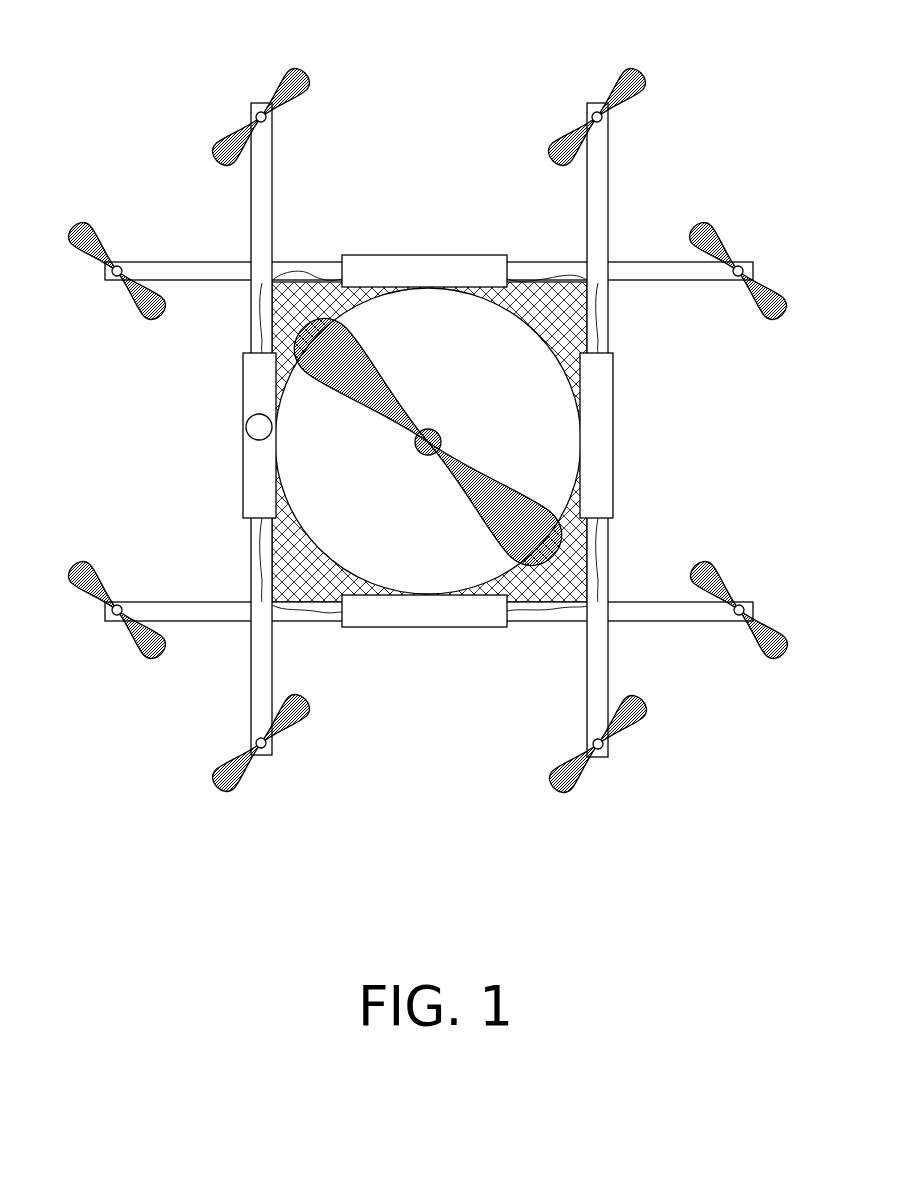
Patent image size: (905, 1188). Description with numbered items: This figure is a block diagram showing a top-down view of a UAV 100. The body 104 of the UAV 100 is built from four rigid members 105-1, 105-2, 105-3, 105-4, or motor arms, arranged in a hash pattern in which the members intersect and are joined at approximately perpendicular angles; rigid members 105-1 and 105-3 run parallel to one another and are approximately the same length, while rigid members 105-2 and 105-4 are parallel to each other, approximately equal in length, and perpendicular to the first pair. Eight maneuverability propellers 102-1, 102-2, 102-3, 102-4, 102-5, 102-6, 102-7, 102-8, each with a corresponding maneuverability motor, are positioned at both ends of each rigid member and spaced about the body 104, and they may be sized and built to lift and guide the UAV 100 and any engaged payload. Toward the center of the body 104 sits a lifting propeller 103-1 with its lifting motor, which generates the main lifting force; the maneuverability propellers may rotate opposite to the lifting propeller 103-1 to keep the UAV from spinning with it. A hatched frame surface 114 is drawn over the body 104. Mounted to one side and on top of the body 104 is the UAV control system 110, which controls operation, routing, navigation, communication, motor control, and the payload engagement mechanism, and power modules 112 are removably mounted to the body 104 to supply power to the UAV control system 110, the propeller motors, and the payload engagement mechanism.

The UAV 100 is at (712, 63).
The maneuverability propeller 102-1 is at (307, 93).
The maneuverability propeller 102-2 is at (637, 100).
The maneuverability propeller 102-3 is at (780, 313).
The maneuverability propeller 102-4 is at (732, 573).
The maneuverability propeller 102-5 is at (637, 730).
The maneuverability propeller 102-6 is at (307, 720).
The maneuverability propeller 102-7 is at (95, 563).
The maneuverability propeller 102-8 is at (100, 233).
The lifting propeller 103-1 is at (373, 337).
The body 104 is at (262, 560).
The rigid member 105-1 is at (675, 281).
The rigid member 105-2 is at (597, 223).
The rigid member 105-3 is at (647, 601).
The rigid member 105-4 is at (272, 258).
The UAV control system 110 is at (243, 382).
The power module 112 is at (652, 432).
The flexible mesh / hatched frame surface 114 is at (532, 283).